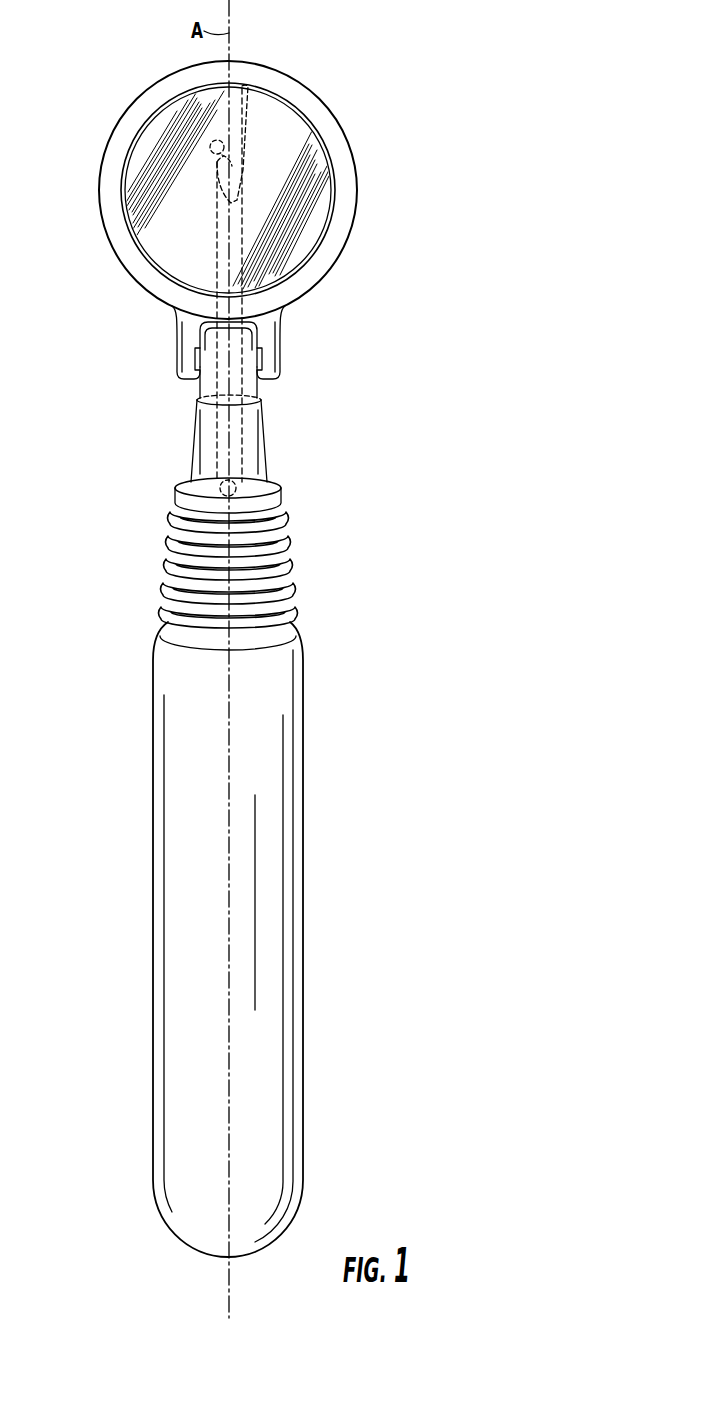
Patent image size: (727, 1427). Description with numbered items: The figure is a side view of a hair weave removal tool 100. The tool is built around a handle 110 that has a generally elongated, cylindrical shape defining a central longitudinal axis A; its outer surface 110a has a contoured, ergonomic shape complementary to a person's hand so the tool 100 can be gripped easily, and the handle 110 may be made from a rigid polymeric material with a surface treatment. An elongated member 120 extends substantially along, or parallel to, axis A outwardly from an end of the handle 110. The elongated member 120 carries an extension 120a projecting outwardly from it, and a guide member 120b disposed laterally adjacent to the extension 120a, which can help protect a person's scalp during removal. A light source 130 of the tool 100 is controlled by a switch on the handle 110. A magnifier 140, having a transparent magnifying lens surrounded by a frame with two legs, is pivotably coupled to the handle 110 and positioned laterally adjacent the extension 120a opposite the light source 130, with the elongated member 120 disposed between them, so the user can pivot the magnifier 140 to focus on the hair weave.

The hair weave removal tool 100 is at (580, 327).
The handle 110 is at (273, 939).
The outer surface 110a is at (286, 735).
The elongated member 120 is at (216, 283).
The extension 120a is at (250, 118).
The guide member 120b is at (210, 146).
The light source 130 is at (237, 486).
The magnifier 140 is at (408, 181).